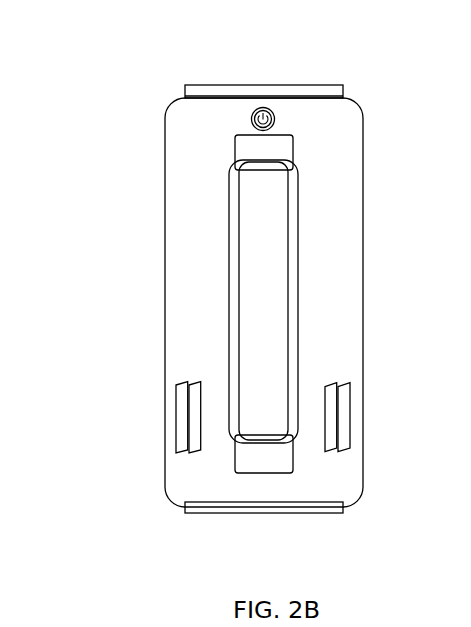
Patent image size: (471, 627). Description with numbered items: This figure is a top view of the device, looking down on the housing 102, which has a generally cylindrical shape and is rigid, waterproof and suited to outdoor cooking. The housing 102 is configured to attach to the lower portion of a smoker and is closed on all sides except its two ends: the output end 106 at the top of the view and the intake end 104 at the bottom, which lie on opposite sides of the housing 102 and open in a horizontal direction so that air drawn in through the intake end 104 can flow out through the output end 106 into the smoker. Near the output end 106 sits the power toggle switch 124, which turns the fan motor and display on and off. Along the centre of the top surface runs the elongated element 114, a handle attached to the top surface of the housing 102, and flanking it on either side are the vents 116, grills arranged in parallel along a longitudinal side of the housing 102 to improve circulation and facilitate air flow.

The housing 102 is at (363, 230).
The intake end 104 is at (293, 513).
The output end 106 is at (224, 85).
The handle bar 114 is at (229, 256).
The vents 116 is at (176, 418).
The power toggle switch 124 is at (251, 119).